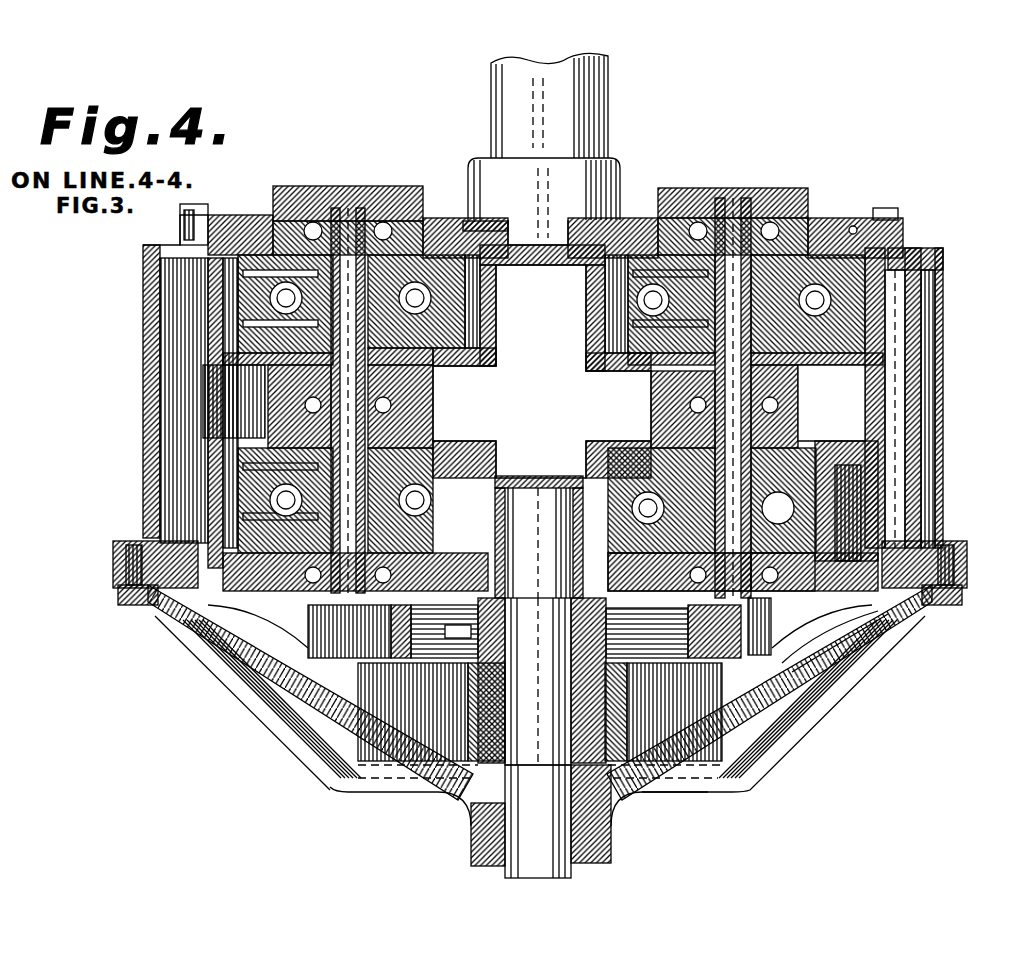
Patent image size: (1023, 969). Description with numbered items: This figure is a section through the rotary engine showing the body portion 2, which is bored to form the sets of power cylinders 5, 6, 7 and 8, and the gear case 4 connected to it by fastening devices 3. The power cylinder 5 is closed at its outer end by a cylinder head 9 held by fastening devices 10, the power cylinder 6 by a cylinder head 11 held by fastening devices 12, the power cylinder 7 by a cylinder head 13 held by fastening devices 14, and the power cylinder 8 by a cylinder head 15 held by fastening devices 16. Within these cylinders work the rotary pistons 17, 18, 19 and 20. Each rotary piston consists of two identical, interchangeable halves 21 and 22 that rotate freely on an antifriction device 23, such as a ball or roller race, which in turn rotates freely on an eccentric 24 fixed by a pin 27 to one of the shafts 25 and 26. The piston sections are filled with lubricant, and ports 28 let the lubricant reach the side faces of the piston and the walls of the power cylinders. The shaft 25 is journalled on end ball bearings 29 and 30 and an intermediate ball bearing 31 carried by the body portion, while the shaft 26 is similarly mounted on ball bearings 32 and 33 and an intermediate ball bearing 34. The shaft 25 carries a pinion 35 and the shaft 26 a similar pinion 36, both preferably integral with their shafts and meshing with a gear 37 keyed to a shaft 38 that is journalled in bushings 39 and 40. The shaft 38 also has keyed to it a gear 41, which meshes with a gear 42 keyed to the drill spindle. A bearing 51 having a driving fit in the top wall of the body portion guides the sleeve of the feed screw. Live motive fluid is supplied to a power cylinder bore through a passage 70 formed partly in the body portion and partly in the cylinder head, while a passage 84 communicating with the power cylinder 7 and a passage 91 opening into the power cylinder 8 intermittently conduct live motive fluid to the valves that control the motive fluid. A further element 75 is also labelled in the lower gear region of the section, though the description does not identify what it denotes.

The body portion 2 is at (938, 398).
The fastening devices 3 is at (940, 594).
The gear case 4 is at (540, 704).
The power cylinder 5 is at (195, 300).
The power cylinder 6 is at (200, 487).
The power cylinder 7 is at (855, 302).
The power cylinder 8 is at (880, 464).
The cylinder head 9 is at (280, 200).
The fastening devices 10 is at (174, 205).
The cylinder head 11 is at (222, 627).
The fastening devices 12 is at (162, 607).
The cylinder head 13 is at (855, 221).
The fastening devices 14 is at (880, 202).
The cylinder head 15 is at (780, 580).
The fastening devices 16 is at (880, 614).
The rotary piston 17 is at (215, 345).
The rotary piston 18 is at (210, 520).
The rotary piston 19 is at (870, 270).
The rotary piston 20 is at (830, 512).
The piston half 21 is at (180, 258).
The piston half 22 is at (205, 328).
The antifriction device 23 is at (200, 282).
The eccentric 24 is at (285, 232).
The shaft 25 is at (340, 190).
The shaft 26 is at (725, 200).
The pin 27 is at (427, 387).
The port 28 is at (262, 232).
The ball bearing 29 is at (330, 192).
The ball bearing 30 is at (252, 634).
The intermediate ball bearing 31 is at (385, 387).
The ball bearing 32 is at (770, 208).
The ball bearing 33 is at (770, 590).
The intermediate ball bearing 34 is at (655, 402).
The pinion 35 is at (262, 650).
The pinion 36 is at (815, 662).
The gear 37 is at (545, 642).
The shaft 38 is at (624, 680).
The bushing 39 is at (535, 470).
The bushing 40 is at (465, 814).
The gear 41 is at (630, 794).
The gear 42 is at (695, 782).
The bearing 51 is at (580, 162).
The passage 70 is at (465, 212).
The gear 75 is at (462, 587).
The passage 84 is at (848, 218).
The passage 91 is at (870, 630).